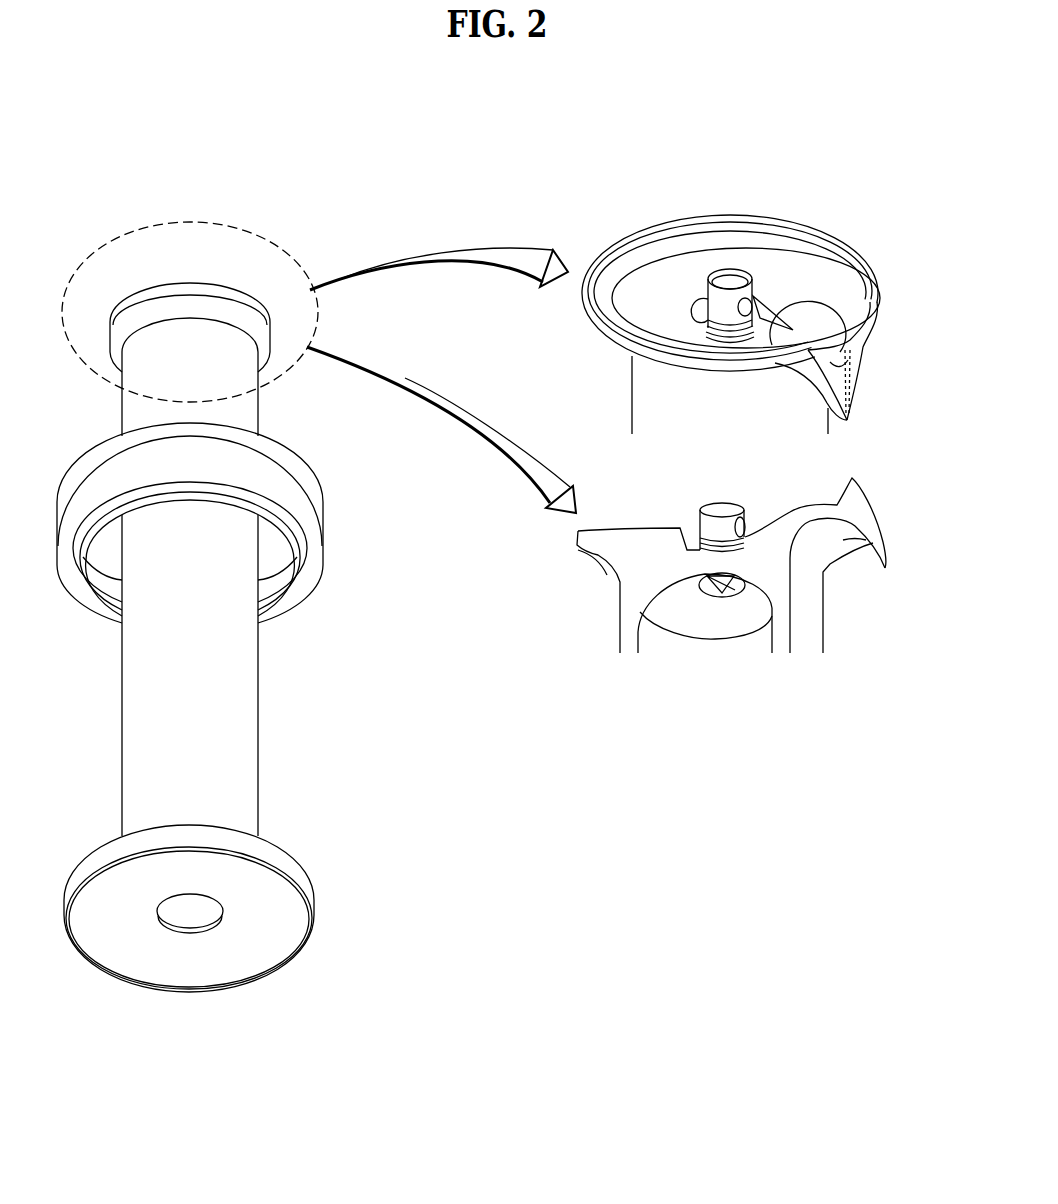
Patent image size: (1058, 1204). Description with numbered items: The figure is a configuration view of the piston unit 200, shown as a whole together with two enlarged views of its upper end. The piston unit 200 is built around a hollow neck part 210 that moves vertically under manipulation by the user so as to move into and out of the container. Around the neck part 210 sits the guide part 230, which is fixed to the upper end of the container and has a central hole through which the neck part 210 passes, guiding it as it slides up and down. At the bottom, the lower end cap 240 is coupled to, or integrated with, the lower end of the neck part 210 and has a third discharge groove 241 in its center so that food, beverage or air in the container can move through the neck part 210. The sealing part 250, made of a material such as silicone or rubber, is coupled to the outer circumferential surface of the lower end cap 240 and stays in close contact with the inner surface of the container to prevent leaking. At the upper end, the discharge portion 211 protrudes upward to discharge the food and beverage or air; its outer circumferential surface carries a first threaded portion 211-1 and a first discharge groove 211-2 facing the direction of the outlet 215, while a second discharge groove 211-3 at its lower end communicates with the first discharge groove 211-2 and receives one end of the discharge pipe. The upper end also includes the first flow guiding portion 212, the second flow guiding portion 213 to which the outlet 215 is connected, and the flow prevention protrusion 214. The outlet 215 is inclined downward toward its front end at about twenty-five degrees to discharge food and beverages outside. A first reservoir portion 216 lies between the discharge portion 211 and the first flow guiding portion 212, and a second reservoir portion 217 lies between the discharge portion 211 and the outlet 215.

The piston unit 200 is at (92, 137).
The neck part 210 is at (245, 409).
The discharge portion 211 is at (728, 276).
The first threaded portion 211-1 is at (698, 538).
The first discharge groove 211-2 is at (745, 523).
The second discharge groove 211-3 is at (712, 581).
The first flow guiding portion 212 is at (662, 270).
The second flow guiding portion 213 is at (840, 268).
The flow prevention protrusion 214 is at (876, 300).
The outlet 215 is at (842, 352).
The first reservoir portion 216 is at (772, 345).
The second reservoir portion 217 is at (805, 293).
The guide part 230 is at (313, 502).
The lower end cap 240 is at (225, 972).
The third discharge groove 241 is at (187, 917).
The sealing part 250 is at (315, 893).